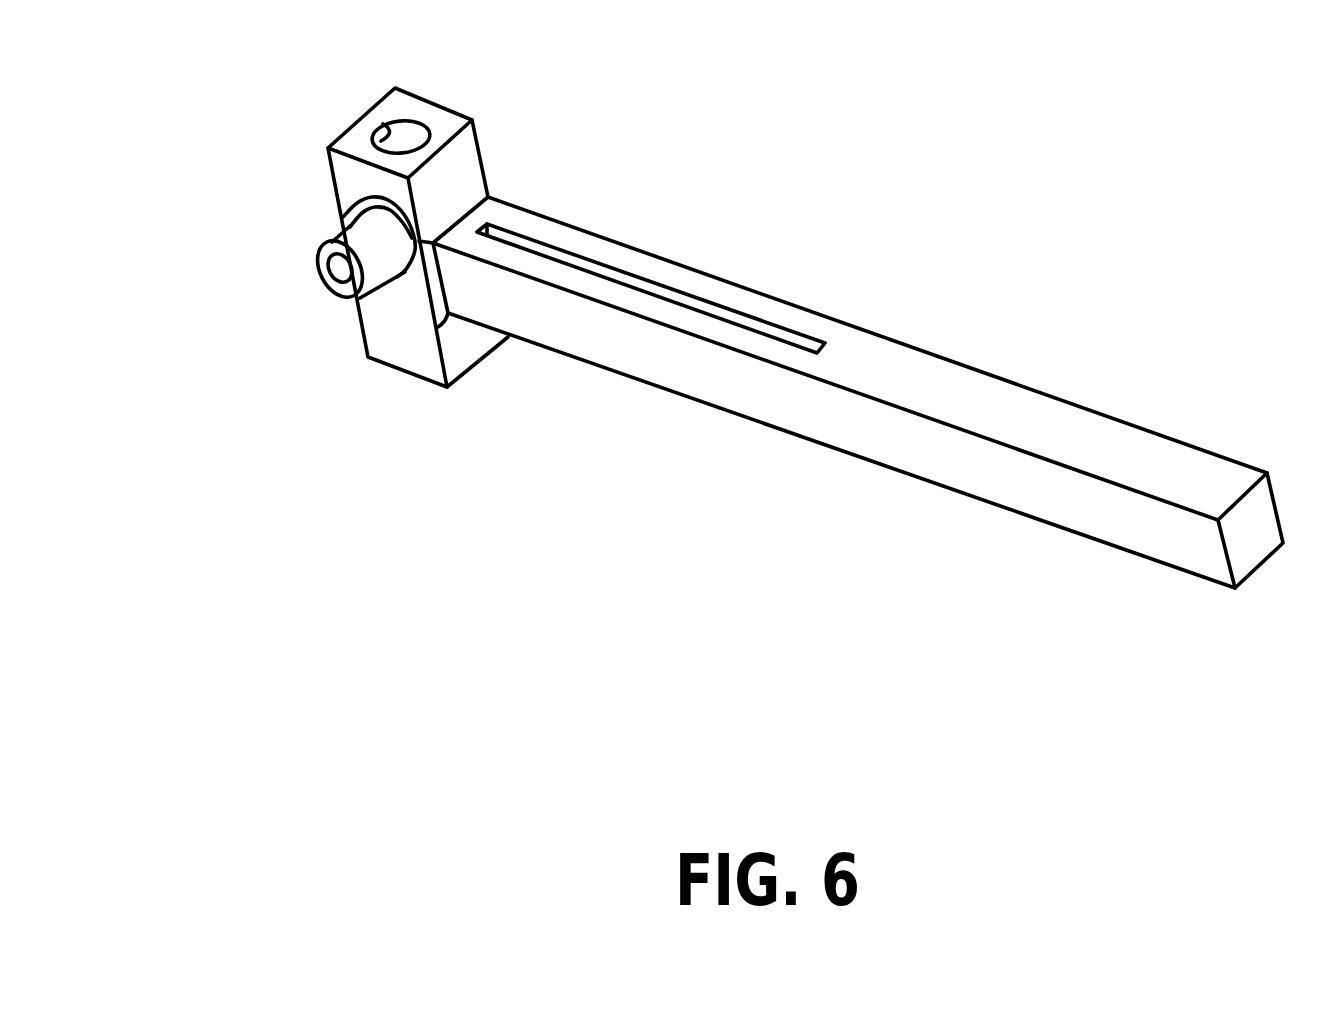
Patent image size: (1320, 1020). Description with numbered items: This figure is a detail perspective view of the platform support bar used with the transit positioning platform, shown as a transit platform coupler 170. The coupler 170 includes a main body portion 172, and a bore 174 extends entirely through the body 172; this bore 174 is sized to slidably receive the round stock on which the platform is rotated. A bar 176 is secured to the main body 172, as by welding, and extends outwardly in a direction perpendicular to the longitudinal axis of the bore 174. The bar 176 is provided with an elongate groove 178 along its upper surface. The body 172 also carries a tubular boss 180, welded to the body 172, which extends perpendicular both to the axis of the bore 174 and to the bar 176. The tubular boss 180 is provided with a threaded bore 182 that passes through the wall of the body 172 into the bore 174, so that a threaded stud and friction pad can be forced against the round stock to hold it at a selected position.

The transit platform coupler 170 is at (783, 469).
The main body portion 172 is at (348, 182).
The bore 174 is at (375, 133).
The bar 176 is at (1036, 409).
The elongate groove 178 is at (688, 289).
The tubular boss 180 is at (343, 217).
The threaded bore 182 is at (338, 270).